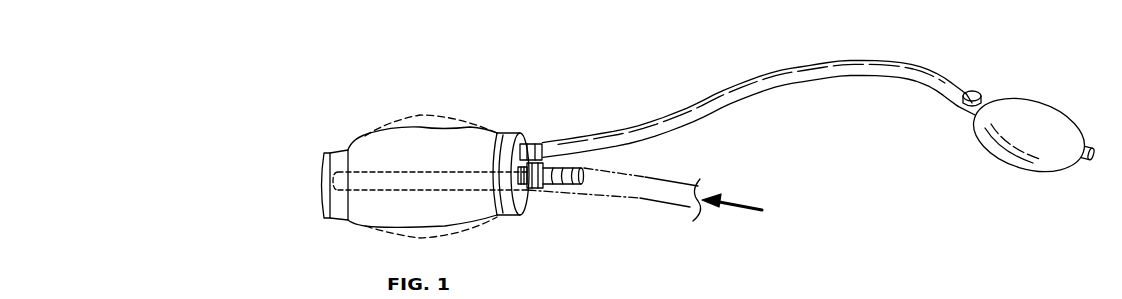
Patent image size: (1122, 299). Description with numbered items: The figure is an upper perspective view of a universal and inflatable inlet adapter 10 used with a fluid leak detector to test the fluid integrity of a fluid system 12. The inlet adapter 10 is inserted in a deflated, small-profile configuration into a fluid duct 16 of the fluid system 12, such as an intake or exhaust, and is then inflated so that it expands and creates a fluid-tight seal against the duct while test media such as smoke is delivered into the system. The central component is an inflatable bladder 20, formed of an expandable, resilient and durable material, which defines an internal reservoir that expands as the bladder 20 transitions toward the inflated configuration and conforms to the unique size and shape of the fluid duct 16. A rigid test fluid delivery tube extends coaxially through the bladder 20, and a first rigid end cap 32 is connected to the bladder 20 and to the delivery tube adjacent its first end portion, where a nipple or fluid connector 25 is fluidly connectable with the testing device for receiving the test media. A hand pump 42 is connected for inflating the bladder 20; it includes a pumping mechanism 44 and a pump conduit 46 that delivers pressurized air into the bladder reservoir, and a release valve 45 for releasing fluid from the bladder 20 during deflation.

The inlet adapter 10 is at (368, 91).
The inflatable bladder 20 is at (437, 140).
The first rigid end cap 32 is at (523, 208).
The fluid connector 25 is at (578, 181).
The pump conduit 46 is at (726, 97).
The hand pump 42 is at (972, 70).
The release valve 45 is at (978, 92).
The pumping mechanism 44 is at (1031, 106).
The fluid duct 16 is at (933, 298).
The fluid system 12 is at (1082, 292).